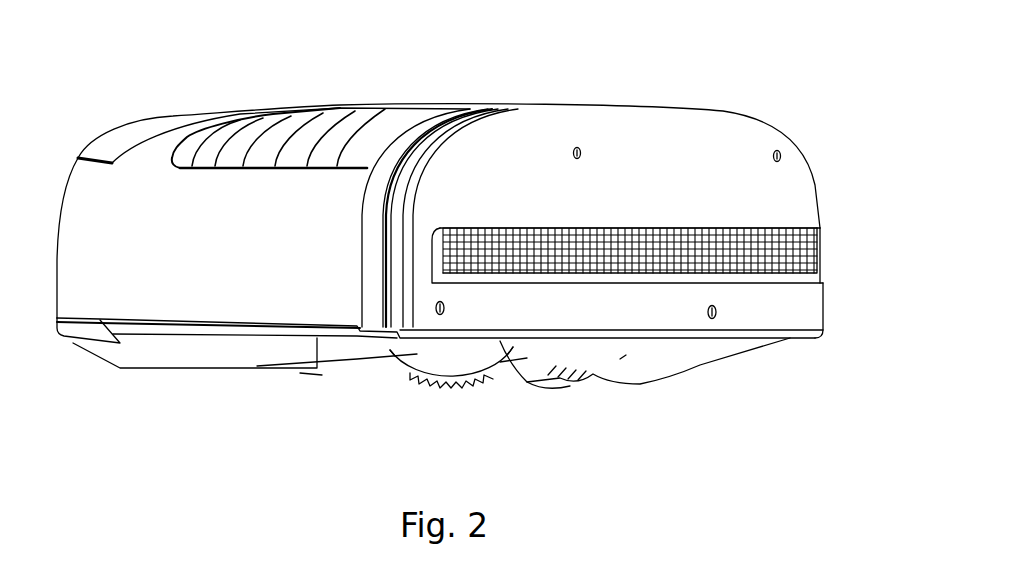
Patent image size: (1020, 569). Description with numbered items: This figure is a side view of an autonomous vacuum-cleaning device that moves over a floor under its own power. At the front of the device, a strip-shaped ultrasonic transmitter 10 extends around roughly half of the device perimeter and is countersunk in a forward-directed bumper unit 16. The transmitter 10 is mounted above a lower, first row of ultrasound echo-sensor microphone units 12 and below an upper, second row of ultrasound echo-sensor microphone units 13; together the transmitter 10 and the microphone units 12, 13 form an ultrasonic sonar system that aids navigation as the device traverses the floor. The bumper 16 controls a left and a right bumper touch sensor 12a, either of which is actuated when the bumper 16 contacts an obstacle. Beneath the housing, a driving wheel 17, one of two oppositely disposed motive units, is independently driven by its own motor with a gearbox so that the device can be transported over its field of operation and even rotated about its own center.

The ultrasonic transmitter 10 is at (818, 250).
The ultrasound echo-sensor microphone unit 12 is at (718, 314).
The bumper touch sensor 12a is at (452, 309).
The ultrasound echo-sensor microphone unit 13 is at (572, 152).
The bumper unit 16 is at (770, 122).
The wheel 17 is at (418, 355).